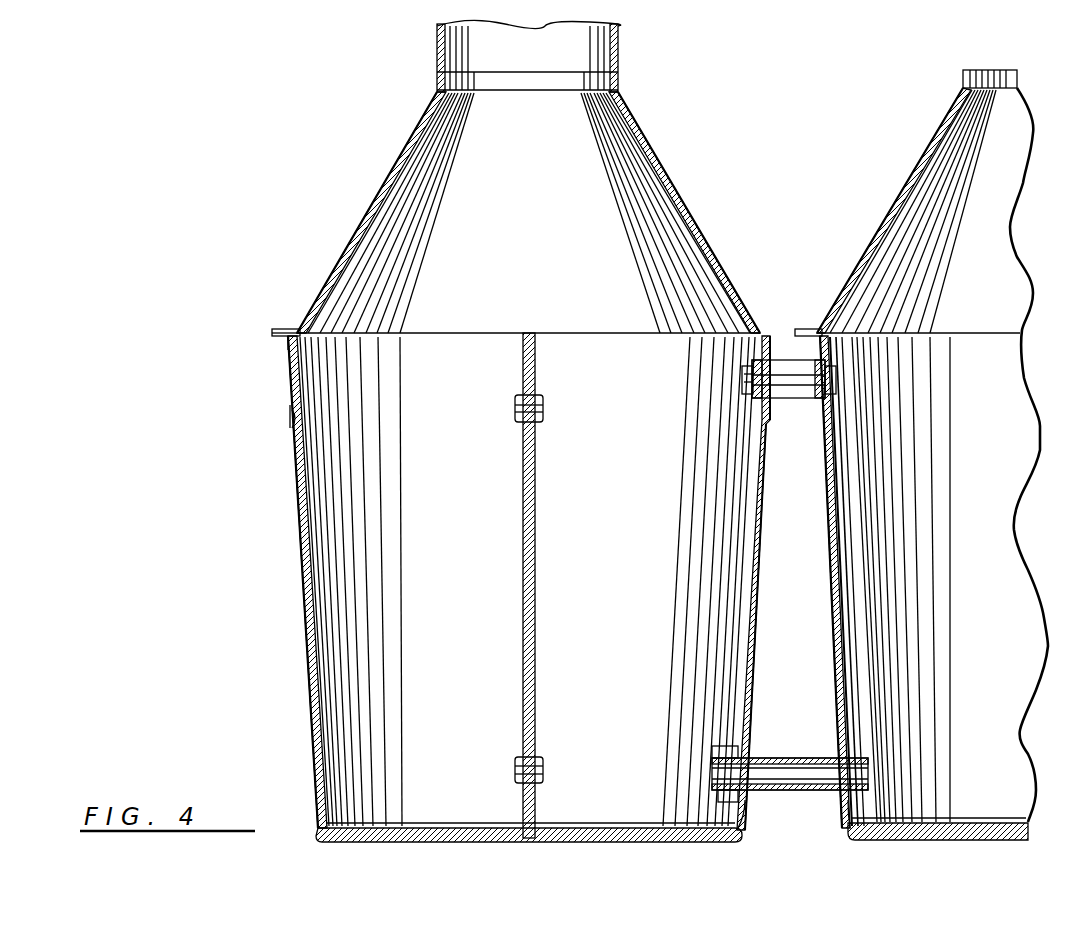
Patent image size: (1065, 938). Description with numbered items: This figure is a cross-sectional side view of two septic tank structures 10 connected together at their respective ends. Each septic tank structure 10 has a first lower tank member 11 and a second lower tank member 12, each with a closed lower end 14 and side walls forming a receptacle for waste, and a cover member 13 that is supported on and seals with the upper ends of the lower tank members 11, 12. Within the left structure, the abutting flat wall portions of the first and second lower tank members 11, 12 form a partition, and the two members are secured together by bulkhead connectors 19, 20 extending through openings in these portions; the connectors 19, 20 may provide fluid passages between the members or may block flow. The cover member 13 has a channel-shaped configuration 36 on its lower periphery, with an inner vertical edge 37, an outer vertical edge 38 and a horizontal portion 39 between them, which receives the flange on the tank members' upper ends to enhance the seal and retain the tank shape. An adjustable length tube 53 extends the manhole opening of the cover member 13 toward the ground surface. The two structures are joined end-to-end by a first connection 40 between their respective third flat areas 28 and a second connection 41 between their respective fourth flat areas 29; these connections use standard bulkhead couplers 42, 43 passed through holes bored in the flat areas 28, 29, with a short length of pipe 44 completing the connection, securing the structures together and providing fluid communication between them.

The septic tank structure 10 is at (312, 240).
The first lower tank member 11 is at (302, 545).
The second lower tank member 12 is at (727, 540).
The cover member 13 is at (378, 190).
The closed lower end 14 is at (462, 842).
The bulkhead connector 19 is at (540, 404).
The bulkhead connector 20 is at (540, 757).
The third flat area 28 is at (815, 400).
The fourth flat area 29 is at (830, 800).
The channel-shaped configuration 36 is at (288, 328).
The inner vertical edge 37 is at (292, 416).
The outer vertical edge 38 is at (278, 332).
The horizontal portion 39 is at (290, 340).
The first connection 40 is at (745, 380).
The second connection 41 is at (716, 756).
The bulkhead coupler 42 is at (750, 370).
The bulkhead coupler 43 is at (722, 798).
The short length of pipe 44 is at (795, 360).
The adjustable length tube 53 is at (437, 66).